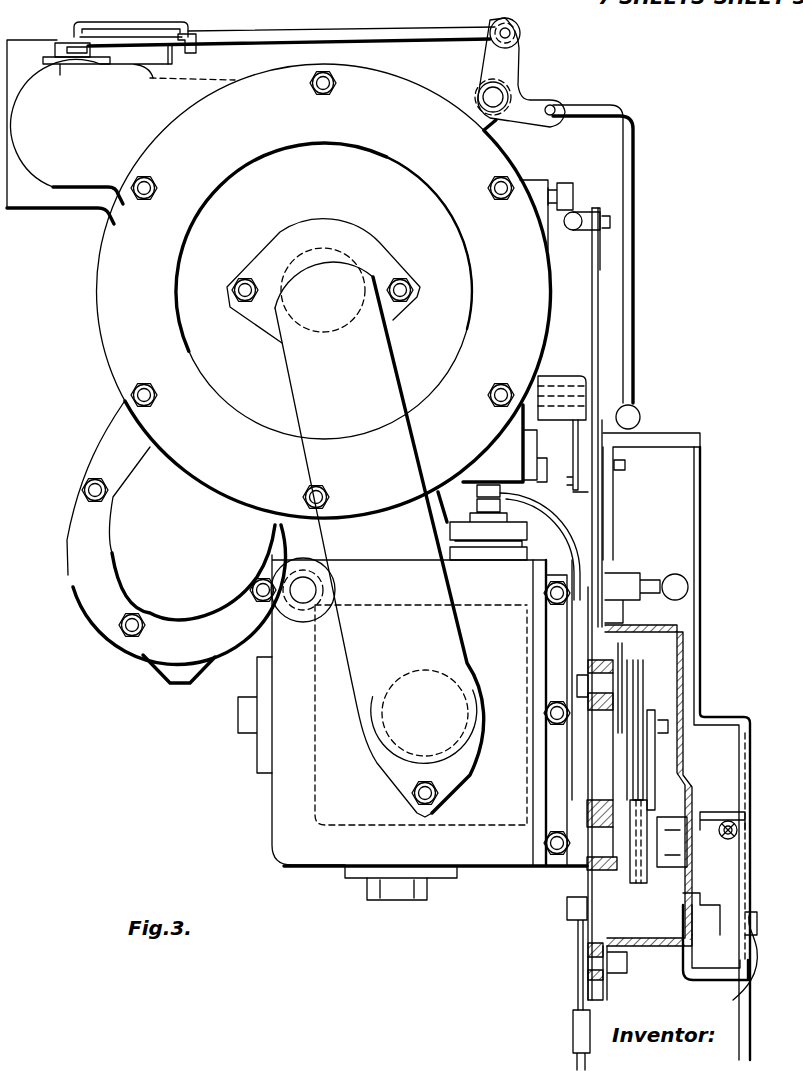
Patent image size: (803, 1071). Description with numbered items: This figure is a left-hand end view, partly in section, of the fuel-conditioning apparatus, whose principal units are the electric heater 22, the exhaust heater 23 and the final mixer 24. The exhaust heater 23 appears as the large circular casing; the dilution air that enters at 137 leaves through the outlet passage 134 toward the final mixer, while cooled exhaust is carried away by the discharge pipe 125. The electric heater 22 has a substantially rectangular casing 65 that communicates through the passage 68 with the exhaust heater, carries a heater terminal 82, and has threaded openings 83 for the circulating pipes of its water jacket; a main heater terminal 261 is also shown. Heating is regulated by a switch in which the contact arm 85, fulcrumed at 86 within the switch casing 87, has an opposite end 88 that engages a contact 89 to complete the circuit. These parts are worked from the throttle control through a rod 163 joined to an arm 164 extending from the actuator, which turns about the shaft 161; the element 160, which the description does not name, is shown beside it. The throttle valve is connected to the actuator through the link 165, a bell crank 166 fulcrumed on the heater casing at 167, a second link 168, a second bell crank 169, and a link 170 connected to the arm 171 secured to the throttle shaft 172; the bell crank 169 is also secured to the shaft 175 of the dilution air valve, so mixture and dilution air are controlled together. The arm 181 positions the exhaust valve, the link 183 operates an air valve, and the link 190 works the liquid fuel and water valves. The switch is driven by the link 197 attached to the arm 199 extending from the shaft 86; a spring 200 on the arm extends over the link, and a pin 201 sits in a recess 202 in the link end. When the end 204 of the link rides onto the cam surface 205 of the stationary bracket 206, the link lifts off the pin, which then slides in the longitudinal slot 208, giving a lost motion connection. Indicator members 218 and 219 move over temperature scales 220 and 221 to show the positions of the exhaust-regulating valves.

The electric heater 22 is at (497, 800).
The exhaust heater 23 is at (205, 335).
The final mixer 24 is at (92, 200).
The casing 65 is at (290, 805).
The passage 68 is at (380, 650).
The terminal 82 is at (536, 530).
The threaded openings 83 is at (303, 596).
The contact arm 85 is at (645, 678).
The fulcrum shaft 86 is at (610, 840).
The switch casing 87 is at (681, 740).
The opposite end of contact arm 88 is at (618, 978).
The contact 89 is at (574, 922).
The discharge pipe 125 is at (123, 543).
The outlet passage 134 is at (59, 167).
The air inlet 137 is at (436, 500).
The rod 160 is at (594, 344).
The shaft 161 is at (556, 420).
The rod 163 is at (575, 212).
The arm 164 is at (596, 238).
The link 165 is at (634, 200).
The bell crank 166 is at (527, 93).
The fulcrum 167 is at (478, 100).
The second link 168 is at (395, 27).
The second bell crank 169 is at (60, 45).
The link 170 is at (155, 22).
The arm 171 is at (196, 40).
The throttle valve shaft 172 is at (174, 56).
The air valve shaft 175 is at (62, 68).
The arm 181 is at (555, 378).
The link 183 is at (608, 500).
The link 190 is at (628, 580).
The link 197 is at (695, 628).
The arm 199 is at (745, 893).
The spring 200 is at (722, 820).
The pin 201 is at (748, 925).
The recess 202 is at (660, 880).
The link end 204 is at (738, 992).
The cam surface 205 is at (720, 968).
The stationary bracket 206 is at (628, 962).
The longitudinal slot 208 is at (721, 794).
The indicator member 218 is at (562, 182).
The indicator member 219 is at (525, 446).
The temperature scale 220 is at (548, 178).
The temperature scale 221 is at (520, 462).
The main heater terminal 261 is at (573, 1033).